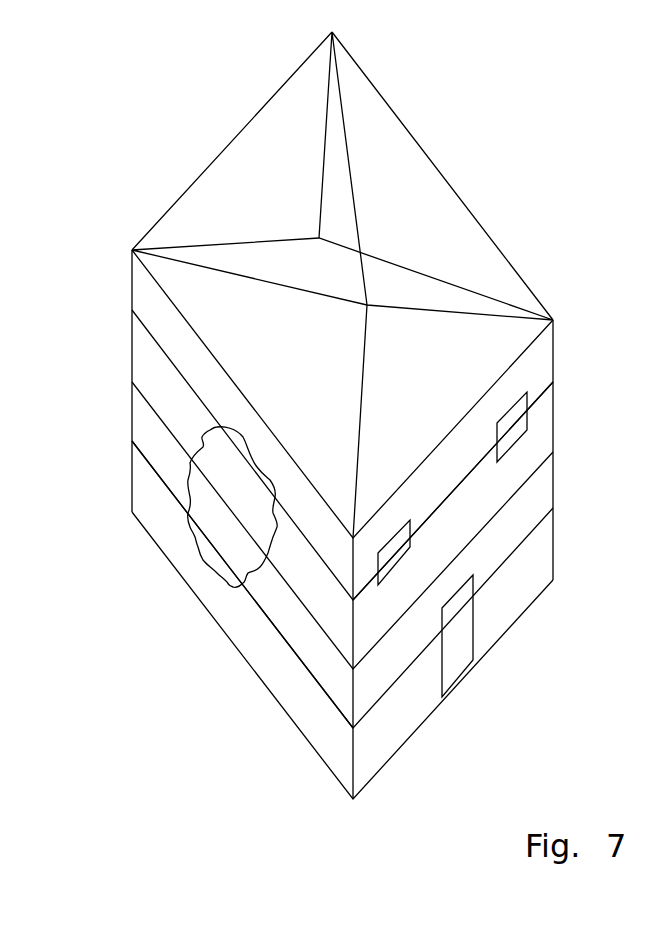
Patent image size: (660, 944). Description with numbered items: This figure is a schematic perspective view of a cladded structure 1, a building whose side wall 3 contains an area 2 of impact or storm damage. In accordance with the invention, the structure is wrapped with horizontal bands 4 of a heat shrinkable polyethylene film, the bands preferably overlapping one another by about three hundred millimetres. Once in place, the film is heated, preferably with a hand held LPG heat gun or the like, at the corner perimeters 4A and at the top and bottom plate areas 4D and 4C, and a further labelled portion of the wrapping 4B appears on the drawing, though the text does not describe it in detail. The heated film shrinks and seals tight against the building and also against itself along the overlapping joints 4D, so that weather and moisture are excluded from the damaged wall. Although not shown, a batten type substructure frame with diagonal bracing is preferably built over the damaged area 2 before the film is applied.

The cladded structure 1 is at (578, 547).
The area of impact or storm damage 2 is at (227, 528).
The side wall 3 is at (285, 613).
The horizontal bands 4 is at (140, 358).
The corner perimeters 4A is at (131, 422).
The side face band 4B is at (460, 418).
The bottom plate area 4C is at (498, 643).
The top plate area and overlapping joints 4D is at (520, 487).